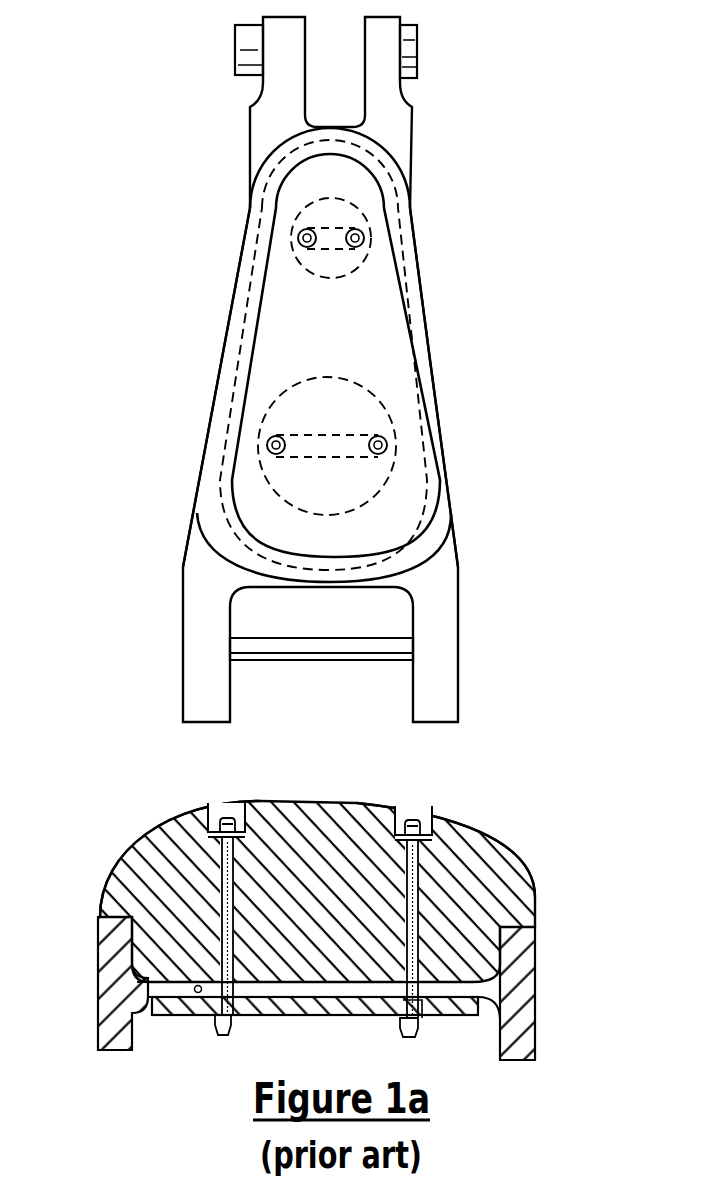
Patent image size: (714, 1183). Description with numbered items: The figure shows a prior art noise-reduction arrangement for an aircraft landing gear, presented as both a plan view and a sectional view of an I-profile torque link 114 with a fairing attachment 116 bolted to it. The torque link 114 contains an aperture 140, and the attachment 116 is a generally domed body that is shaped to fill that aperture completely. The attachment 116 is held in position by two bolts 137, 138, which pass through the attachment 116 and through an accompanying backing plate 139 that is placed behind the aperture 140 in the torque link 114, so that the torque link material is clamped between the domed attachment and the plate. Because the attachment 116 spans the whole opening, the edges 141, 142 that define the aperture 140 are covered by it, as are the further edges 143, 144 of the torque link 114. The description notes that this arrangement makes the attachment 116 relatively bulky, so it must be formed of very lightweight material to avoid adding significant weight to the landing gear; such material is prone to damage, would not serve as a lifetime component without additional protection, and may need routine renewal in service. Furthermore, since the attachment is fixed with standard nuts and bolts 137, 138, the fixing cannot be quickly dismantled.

The torque link 114 is at (460, 600).
The fairing attachment 116 is at (380, 328).
The bolt 137 is at (268, 447).
The bolt 138 is at (383, 445).
The backing plate 139 is at (278, 1017).
The aperture 140 is at (363, 988).
The edge 141 is at (200, 993).
The edge 142 is at (432, 1000).
The edge 143 is at (247, 237).
The edge 144 is at (417, 235).